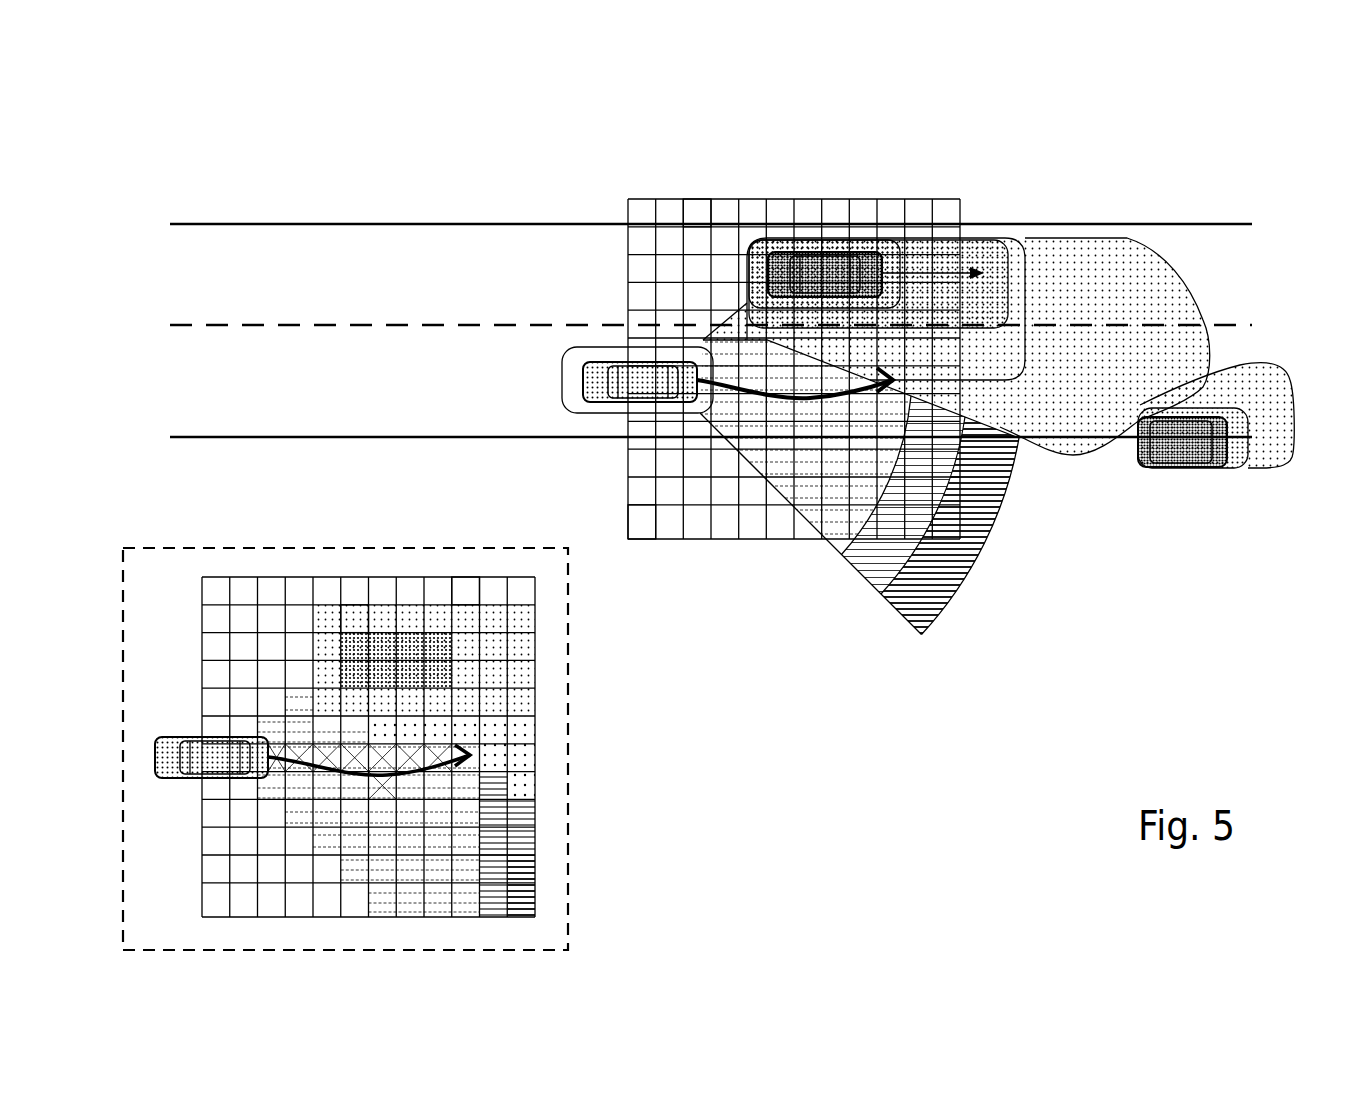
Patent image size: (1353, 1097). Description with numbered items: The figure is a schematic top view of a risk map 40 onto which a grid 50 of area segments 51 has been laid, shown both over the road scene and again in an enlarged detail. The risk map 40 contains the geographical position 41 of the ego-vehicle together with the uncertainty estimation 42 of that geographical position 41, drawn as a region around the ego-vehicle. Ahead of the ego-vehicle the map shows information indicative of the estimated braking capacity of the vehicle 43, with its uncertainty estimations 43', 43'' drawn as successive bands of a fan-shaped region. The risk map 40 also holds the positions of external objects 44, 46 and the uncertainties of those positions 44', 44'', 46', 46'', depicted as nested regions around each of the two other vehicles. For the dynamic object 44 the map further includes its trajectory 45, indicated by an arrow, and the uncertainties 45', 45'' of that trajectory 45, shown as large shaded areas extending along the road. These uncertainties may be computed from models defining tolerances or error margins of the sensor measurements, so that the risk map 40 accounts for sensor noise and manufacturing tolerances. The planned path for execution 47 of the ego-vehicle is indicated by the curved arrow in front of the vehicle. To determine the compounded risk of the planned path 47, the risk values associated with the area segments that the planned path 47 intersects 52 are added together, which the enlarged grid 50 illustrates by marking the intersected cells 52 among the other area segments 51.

The risk map 40 is at (708, 657).
The geographical position of the ego-vehicle 41 is at (622, 388).
The uncertainty estimation of the geographical position 42 is at (580, 407).
The estimated braking capacity of the vehicle 43 is at (811, 487).
The uncertainty estimation of the braking capacity 43' is at (904, 535).
The uncertainty estimation of the braking capacity 43'' is at (950, 564).
The external object 44 is at (825, 220).
The uncertainty of the position of the external object 44' is at (824, 226).
The uncertainty of the position of the external object 44'' is at (928, 244).
The trajectory of the dynamic object 45 is at (956, 283).
The uncertainty of the trajectory 45' is at (1105, 315).
The uncertainty of the trajectory 45'' is at (1083, 465).
The external object 46 is at (1167, 483).
The uncertainty of the position of the external object 46' is at (1196, 474).
The uncertainty of the position of the external object 46'' is at (1229, 385).
The planned path for execution 47 is at (703, 341).
The grid 50 is at (632, 152).
The area segments 51 is at (705, 210).
The intersected area segments 52 is at (473, 748).